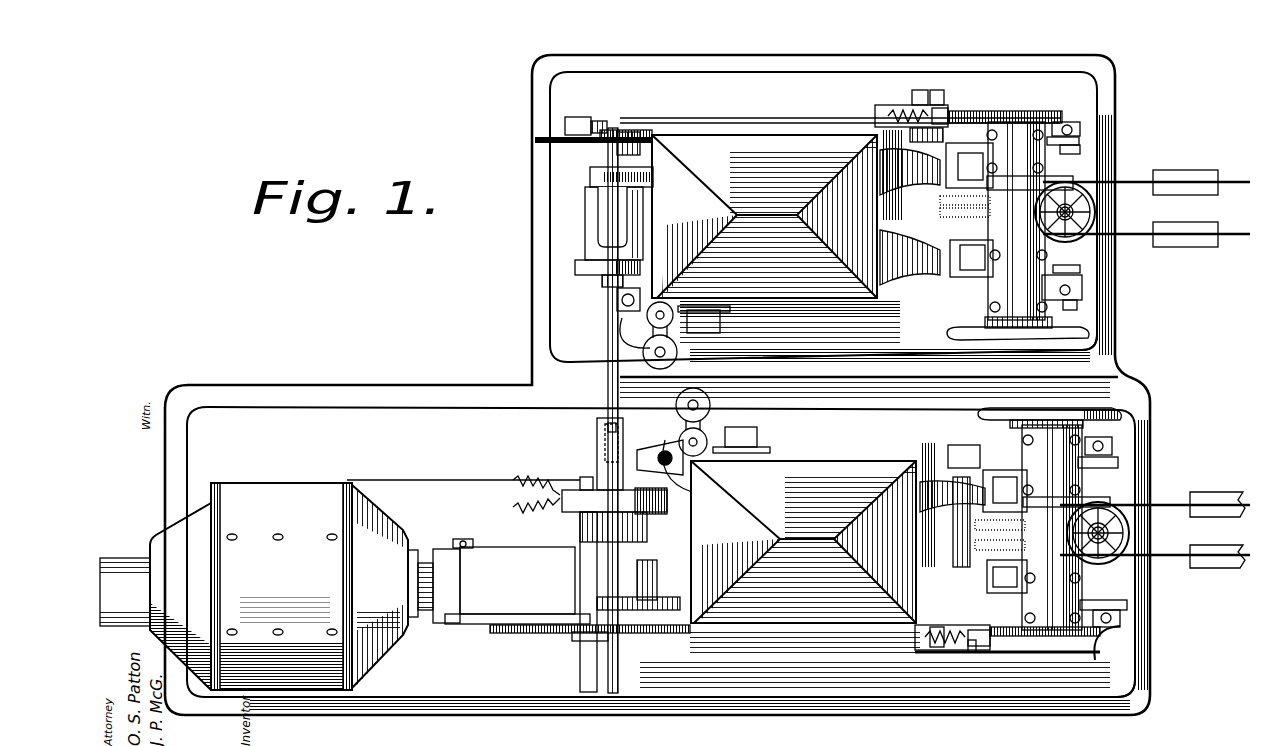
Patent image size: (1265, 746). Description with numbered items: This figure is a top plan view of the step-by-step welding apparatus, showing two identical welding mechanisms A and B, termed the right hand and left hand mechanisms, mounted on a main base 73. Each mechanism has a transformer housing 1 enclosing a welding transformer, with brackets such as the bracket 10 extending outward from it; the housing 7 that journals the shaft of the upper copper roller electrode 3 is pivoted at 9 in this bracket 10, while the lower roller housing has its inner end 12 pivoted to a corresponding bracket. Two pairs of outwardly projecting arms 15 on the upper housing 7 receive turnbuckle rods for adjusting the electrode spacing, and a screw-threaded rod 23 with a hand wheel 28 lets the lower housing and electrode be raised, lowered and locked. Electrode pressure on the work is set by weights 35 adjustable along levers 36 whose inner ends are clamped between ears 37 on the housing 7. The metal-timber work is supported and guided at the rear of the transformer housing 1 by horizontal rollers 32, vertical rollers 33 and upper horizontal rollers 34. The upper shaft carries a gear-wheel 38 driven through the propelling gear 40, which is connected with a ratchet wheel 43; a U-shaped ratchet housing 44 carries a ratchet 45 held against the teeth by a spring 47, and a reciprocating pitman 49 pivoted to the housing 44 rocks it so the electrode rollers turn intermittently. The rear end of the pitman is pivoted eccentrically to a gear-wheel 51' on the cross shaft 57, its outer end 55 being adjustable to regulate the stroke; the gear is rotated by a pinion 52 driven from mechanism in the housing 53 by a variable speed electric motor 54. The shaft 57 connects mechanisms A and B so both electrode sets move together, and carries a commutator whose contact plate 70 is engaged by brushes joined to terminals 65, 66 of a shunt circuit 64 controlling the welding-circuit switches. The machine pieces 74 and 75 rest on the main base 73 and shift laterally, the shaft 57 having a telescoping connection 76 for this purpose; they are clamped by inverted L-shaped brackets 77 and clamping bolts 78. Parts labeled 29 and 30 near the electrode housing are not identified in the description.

The transformer housing 1 is at (784, 379).
The upper copper roller electrode 3 is at (960, 330).
The upper bearing housing 7 is at (1034, 376).
The pivot 9 is at (880, 232).
The bracket 10 is at (895, 175).
The inner end of lower housing 12 is at (1005, 608).
The outwardly projecting arms 15 is at (1085, 150).
The screw-threaded rod 23 is at (997, 382).
The hand wheel 28 is at (1080, 180).
The guide arm 29 is at (885, 210).
The contact bar 30 is at (997, 360).
The horizontal rollers 32 is at (643, 352).
The vertical rollers 33 is at (672, 310).
The upper horizontal rollers 34 is at (722, 322).
The weights 35 is at (1199, 369).
The levers 36 is at (1118, 365).
The ears 37 is at (1072, 170).
The gear-wheel 38 is at (985, 120).
The propelling gear 40 is at (985, 114).
The ratchet wheel 43 is at (940, 92).
The ratchet housing 44 is at (878, 112).
The ratchet 45 is at (895, 107).
The spring 47 is at (922, 92).
The pitman 49 is at (738, 118).
The gear-wheel 51' is at (582, 129).
The pinion 52 is at (512, 633).
The housing 53 is at (511, 581).
The variable speed electric motor 54 is at (266, 586).
The outer end of pitman 55 is at (583, 117).
The shaft 57 is at (603, 412).
The shunt circuit 64 is at (519, 494).
The terminal 65 is at (601, 561).
The terminal 66 is at (562, 492).
The contact plate 70 is at (625, 132).
The main base 73 is at (1150, 392).
The machine base piece 74 is at (1090, 345).
The machine base piece 75 is at (1105, 648).
The telescoping connection 76 is at (597, 443).
The inverted L-shaped brackets 77 is at (615, 156).
The clamping bolts 78 is at (617, 300).
The welding mechanism A is at (852, 652).
The welding mechanism B is at (750, 100).